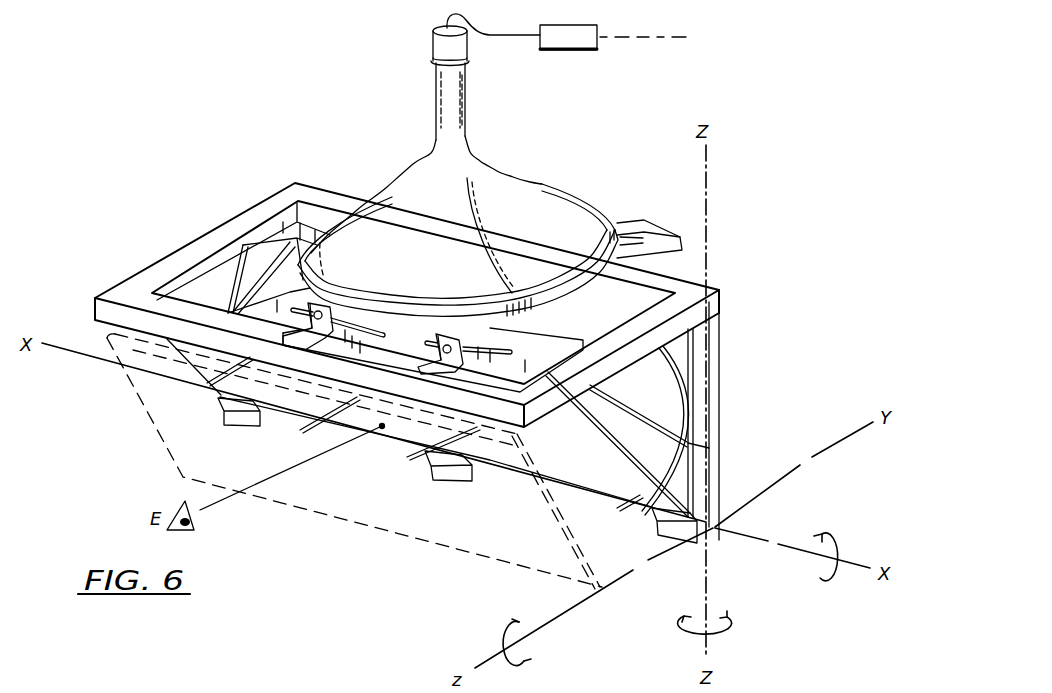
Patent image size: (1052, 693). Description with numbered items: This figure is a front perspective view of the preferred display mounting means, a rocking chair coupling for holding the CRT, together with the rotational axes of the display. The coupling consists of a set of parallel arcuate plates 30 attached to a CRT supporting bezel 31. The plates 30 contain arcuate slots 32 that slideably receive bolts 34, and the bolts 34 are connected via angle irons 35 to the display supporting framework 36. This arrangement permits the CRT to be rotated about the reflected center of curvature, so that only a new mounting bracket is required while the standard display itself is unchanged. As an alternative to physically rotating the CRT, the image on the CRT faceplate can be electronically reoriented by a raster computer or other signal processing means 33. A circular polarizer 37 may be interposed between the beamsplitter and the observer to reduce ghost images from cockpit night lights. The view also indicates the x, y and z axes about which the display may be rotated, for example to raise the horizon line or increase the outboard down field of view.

The parallel arcuate plates 30 is at (617, 223).
The CRT supporting bezel 31 is at (587, 277).
The arcuate slots 32 is at (376, 341).
The signal processing means 33 is at (563, 43).
The bolts 34 is at (316, 313).
The angle irons 35 is at (437, 338).
The display supporting framework 36 is at (177, 260).
The circular polarizer 37 is at (277, 487).